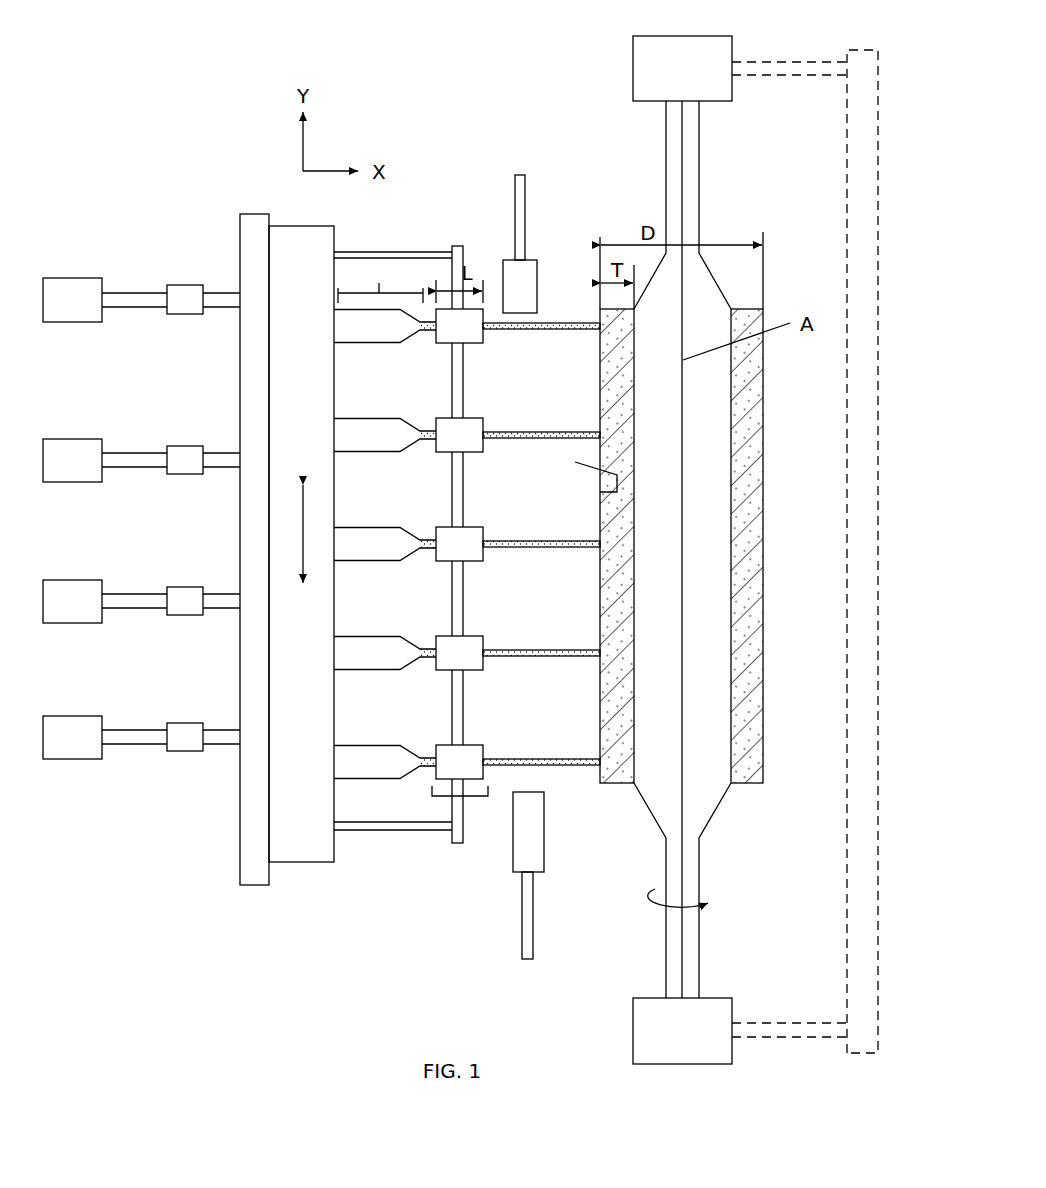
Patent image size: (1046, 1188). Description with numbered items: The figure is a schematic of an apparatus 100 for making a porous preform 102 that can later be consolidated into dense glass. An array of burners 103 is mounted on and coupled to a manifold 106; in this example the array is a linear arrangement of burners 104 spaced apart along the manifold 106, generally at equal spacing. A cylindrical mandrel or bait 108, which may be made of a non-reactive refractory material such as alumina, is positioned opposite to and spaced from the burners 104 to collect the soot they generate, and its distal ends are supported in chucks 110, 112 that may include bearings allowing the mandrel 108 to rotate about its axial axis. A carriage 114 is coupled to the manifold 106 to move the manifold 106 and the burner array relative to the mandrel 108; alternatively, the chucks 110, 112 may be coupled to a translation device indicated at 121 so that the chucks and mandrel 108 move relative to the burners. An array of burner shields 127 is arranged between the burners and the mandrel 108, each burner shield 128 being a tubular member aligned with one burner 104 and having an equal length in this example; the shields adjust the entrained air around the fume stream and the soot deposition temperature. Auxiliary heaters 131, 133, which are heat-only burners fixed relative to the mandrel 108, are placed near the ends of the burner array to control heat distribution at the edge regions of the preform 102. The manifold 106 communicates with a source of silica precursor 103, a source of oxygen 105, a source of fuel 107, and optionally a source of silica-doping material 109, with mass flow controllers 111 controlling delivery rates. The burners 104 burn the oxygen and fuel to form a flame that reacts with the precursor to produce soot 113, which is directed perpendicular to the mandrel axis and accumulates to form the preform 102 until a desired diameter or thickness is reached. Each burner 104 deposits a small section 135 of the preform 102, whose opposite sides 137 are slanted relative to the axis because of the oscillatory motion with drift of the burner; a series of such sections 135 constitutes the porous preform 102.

The apparatus 100 is at (439, 200).
The porous preform 102 is at (757, 407).
The array of burners 103 is at (233, 291).
The burner 104 is at (382, 344).
The source of oxygen 105 is at (141, 460).
The manifold 106 is at (291, 243).
The source of fuel 107 is at (141, 601).
The mandrel or bait 108 is at (713, 576).
The source of silica-doping material 109 is at (141, 737).
The chuck 110 is at (645, 68).
The mass flow controller 111 is at (183, 317).
The chuck 112 is at (640, 1025).
The soot 113 is at (528, 327).
The carriage 114 is at (250, 251).
The carriage 121 is at (863, 55).
The array of burner shields 127 is at (465, 797).
The burner shield 128 is at (474, 344).
The auxiliary heater 131 is at (540, 830).
The auxiliary heater 133 is at (532, 283).
The section 135 is at (610, 500).
The opposite sides 137 is at (590, 600).